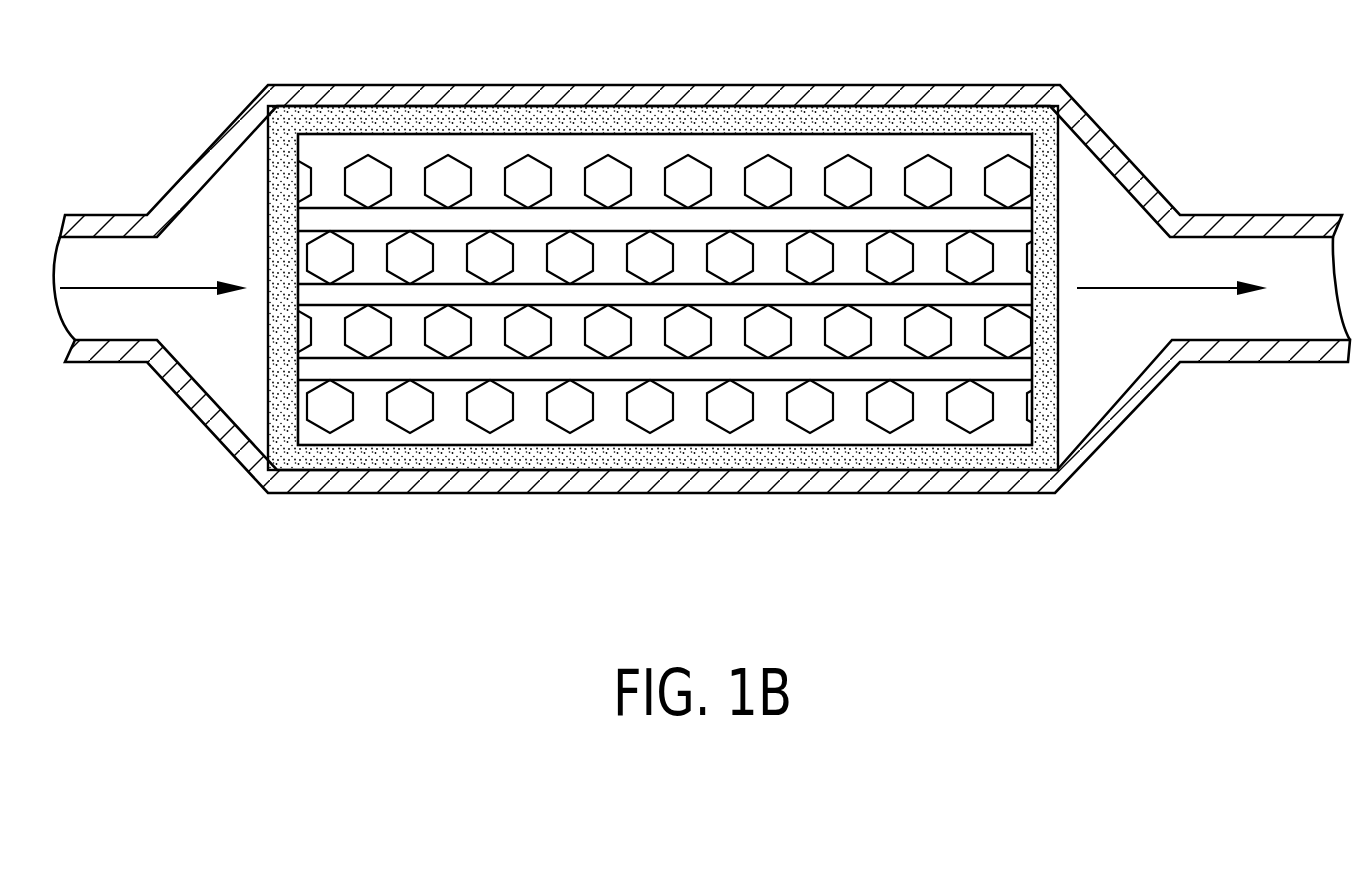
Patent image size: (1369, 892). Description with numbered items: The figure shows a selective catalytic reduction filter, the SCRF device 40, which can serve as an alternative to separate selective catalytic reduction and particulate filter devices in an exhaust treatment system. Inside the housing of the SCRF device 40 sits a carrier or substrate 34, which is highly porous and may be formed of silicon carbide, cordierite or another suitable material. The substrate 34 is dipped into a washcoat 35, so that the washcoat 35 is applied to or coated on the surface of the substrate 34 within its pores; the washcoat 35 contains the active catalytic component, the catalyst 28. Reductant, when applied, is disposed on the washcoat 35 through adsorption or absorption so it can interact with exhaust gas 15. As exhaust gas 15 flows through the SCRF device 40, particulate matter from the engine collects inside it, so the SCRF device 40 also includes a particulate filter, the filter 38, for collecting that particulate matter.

The exhaust gas 15 is at (1128, 288).
The catalyst 28 is at (888, 143).
The substrate 34 is at (848, 425).
The washcoat 35 is at (1060, 427).
The filter 38 is at (734, 182).
The SCRF device 40 is at (498, 493).